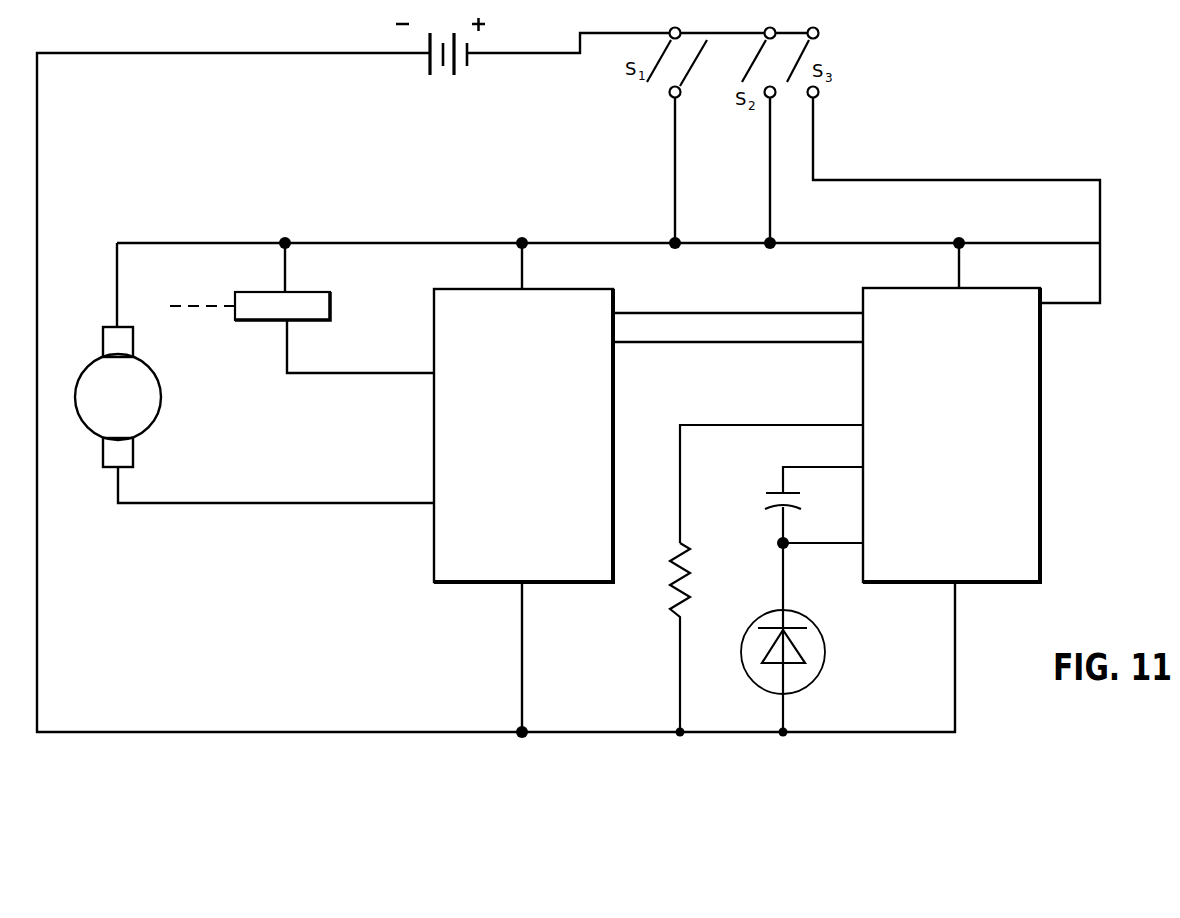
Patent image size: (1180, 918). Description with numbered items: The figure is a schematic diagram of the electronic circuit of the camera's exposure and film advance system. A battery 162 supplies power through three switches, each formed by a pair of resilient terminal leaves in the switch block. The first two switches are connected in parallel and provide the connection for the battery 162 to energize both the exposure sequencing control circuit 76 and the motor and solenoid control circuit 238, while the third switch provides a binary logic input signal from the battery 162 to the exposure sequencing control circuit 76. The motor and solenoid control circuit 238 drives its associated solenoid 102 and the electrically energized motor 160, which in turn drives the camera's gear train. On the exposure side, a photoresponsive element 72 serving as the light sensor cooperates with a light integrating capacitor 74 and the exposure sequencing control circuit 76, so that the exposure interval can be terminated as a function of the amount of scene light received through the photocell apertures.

The battery 162 is at (469, 60).
The solenoid 102 is at (318, 291).
The motor 160 is at (161, 392).
The motor and solenoid control circuit 238 is at (455, 583).
The exposure sequencing control circuit 76 is at (1003, 583).
The light integrating capacitor 74 is at (783, 489).
The photoresponsive element 72 is at (808, 690).